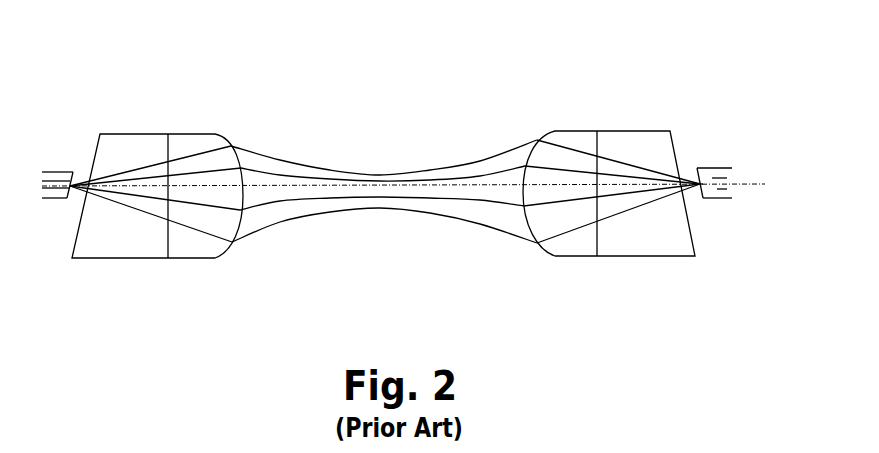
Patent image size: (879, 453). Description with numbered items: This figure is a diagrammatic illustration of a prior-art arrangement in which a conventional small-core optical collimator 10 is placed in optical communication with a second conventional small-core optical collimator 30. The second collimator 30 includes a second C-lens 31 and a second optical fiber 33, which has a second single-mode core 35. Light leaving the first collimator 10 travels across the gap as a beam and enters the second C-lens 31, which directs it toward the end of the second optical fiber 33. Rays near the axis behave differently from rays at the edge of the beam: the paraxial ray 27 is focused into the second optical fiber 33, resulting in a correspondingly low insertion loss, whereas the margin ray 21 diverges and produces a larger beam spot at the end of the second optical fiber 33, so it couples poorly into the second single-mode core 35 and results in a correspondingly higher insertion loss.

The small-core optical collimator 10 is at (213, 69).
The margin ray 21 is at (491, 224).
The paraxial ray 27 is at (507, 173).
The second small-core optical collimator 30 is at (632, 150).
The second C-lens 31 is at (642, 148).
The second optical fiber 33 is at (718, 199).
The second single-mode core 35 is at (711, 183).